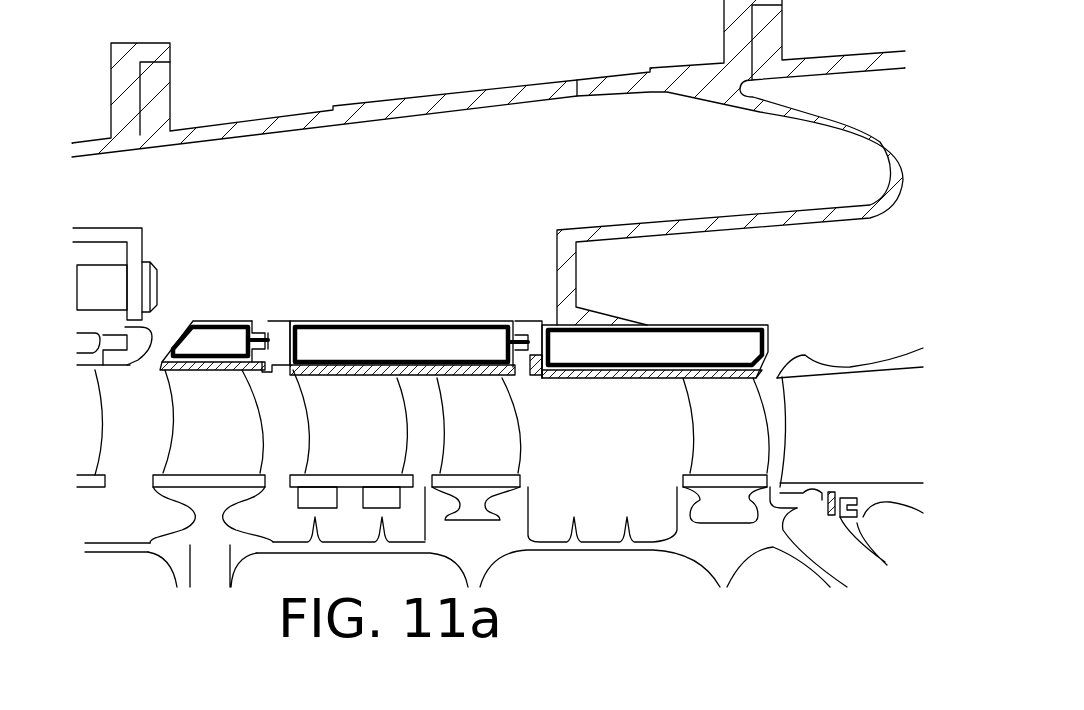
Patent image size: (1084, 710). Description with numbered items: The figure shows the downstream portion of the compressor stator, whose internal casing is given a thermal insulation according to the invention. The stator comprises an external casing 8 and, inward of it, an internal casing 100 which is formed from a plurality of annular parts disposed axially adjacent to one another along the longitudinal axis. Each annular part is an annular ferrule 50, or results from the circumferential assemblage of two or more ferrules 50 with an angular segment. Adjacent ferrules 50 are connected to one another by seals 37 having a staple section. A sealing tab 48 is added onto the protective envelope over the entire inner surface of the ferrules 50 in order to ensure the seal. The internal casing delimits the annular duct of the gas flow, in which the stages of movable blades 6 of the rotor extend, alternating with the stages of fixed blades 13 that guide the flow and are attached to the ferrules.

The external casing 8 is at (600, 78).
The internal casing 100 is at (610, 177).
The ferrule 50 is at (222, 318).
The seal 37 is at (535, 325).
The sealing tab 48 is at (707, 378).
The movable blades 6 is at (200, 413).
The fixed blades 13 is at (330, 410).